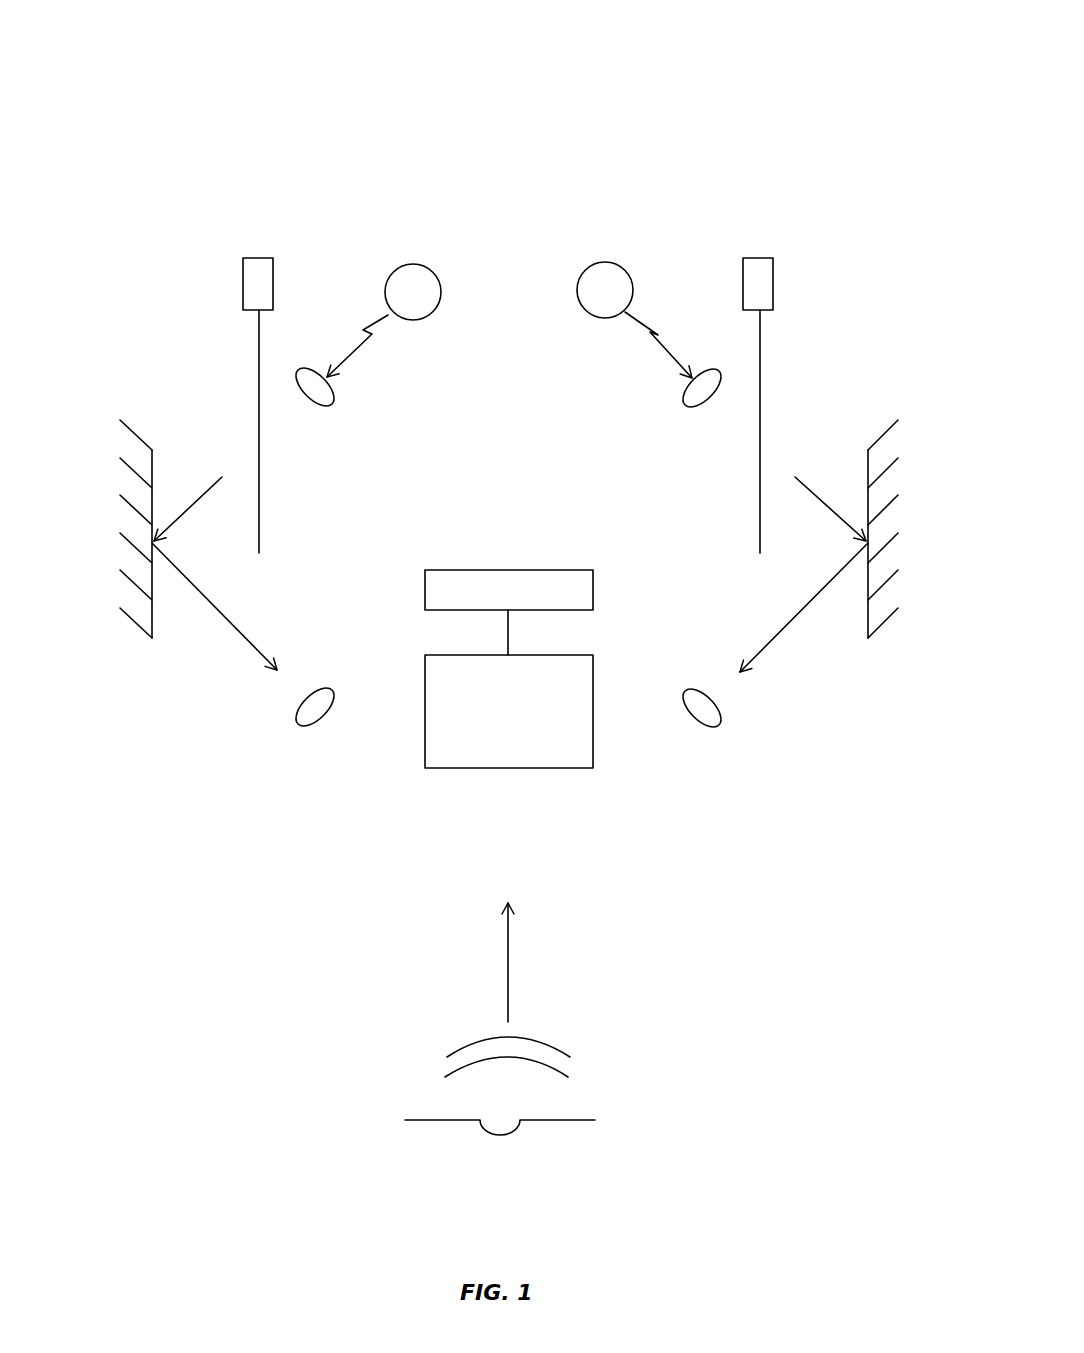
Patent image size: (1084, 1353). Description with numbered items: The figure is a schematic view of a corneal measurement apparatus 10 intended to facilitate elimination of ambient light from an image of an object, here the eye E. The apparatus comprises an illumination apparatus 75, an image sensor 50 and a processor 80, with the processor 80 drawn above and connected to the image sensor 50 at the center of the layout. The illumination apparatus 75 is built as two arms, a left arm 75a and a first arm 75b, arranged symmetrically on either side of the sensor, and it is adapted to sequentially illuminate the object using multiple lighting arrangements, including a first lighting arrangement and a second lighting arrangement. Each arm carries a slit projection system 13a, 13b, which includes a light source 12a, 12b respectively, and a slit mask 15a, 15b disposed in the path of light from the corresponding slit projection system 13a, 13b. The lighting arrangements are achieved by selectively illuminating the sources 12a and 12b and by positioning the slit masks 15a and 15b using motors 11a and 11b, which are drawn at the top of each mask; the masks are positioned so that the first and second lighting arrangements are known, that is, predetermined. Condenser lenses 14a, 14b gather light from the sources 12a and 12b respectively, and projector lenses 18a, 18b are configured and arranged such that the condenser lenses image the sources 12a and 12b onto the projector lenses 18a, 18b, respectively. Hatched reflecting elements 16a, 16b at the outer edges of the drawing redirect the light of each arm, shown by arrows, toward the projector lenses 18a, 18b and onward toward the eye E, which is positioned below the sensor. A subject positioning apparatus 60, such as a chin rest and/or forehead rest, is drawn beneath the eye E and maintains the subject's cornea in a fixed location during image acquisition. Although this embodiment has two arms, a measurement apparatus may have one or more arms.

The measurement apparatus 10 is at (295, 883).
The illumination apparatus 75 is at (593, 97).
The left arm 75a is at (208, 192).
The first arm 75b is at (793, 215).
The motor 11a is at (243, 258).
The motor 11b is at (773, 260).
The light source 12a is at (415, 264).
The light source 12b is at (605, 262).
The slit projection system 13a is at (377, 228).
The slit projection system 13b is at (653, 225).
The condenser lens 14a is at (330, 405).
The condenser lens 14b is at (683, 403).
The slit mask 15a is at (259, 402).
The slit mask 15b is at (760, 373).
The first mirror 16a is at (152, 628).
The second mirror 16b is at (868, 632).
The projector lens 18a is at (307, 723).
The projector lens 18b is at (722, 723).
The image sensor 50 is at (593, 768).
The subject positioning apparatus 60 is at (575, 1120).
The processor 80 is at (593, 570).
The eye E is at (548, 1045).